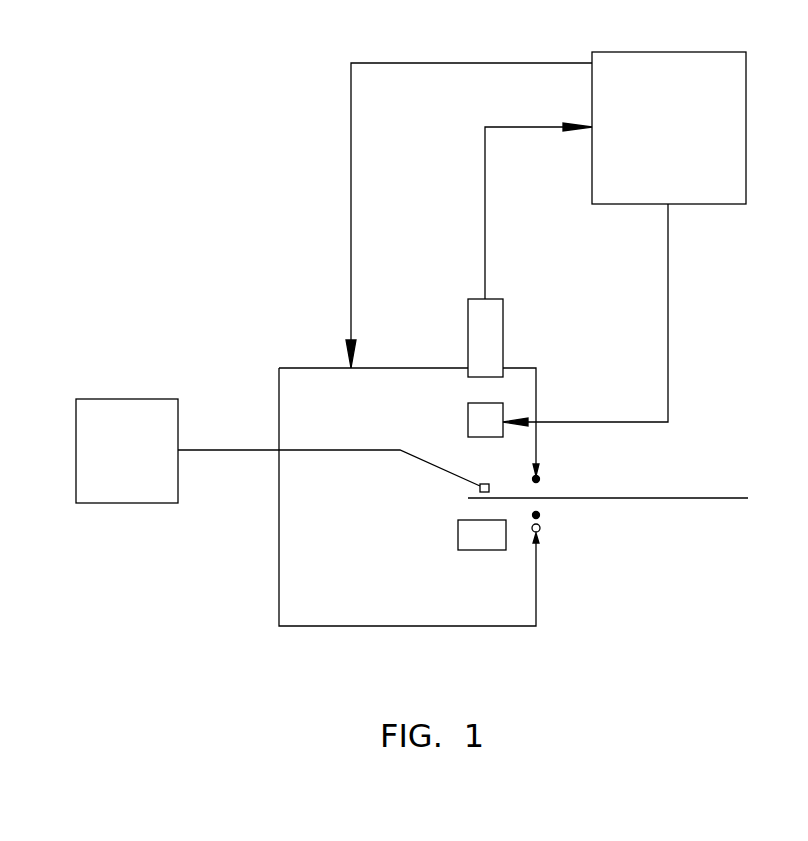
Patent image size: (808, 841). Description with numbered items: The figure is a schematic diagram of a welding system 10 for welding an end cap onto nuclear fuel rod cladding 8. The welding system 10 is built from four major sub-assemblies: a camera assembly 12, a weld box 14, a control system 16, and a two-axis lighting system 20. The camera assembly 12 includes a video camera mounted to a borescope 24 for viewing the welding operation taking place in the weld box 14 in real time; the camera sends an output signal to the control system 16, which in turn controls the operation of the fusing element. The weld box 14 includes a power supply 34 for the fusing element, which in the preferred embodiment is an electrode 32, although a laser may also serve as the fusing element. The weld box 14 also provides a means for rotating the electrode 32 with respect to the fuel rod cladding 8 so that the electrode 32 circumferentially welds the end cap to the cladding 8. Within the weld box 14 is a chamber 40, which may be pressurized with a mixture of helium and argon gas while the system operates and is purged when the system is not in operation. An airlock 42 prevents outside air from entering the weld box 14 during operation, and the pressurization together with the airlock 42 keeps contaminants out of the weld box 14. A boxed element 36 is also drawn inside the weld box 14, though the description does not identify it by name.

The nuclear fuel rod cladding 8 is at (698, 498).
The welding system 10 is at (248, 150).
The camera assembly 12 is at (503, 322).
The weld box 14 is at (423, 626).
The control system 16 is at (652, 128).
The 2-axis lighting system 20 is at (500, 428).
The borescope 24 is at (807, 562).
The electrode 32 is at (480, 488).
The power supply 34 is at (115, 457).
The element 36 is at (482, 535).
The chamber 40 is at (378, 581).
The airlock 42 is at (541, 528).